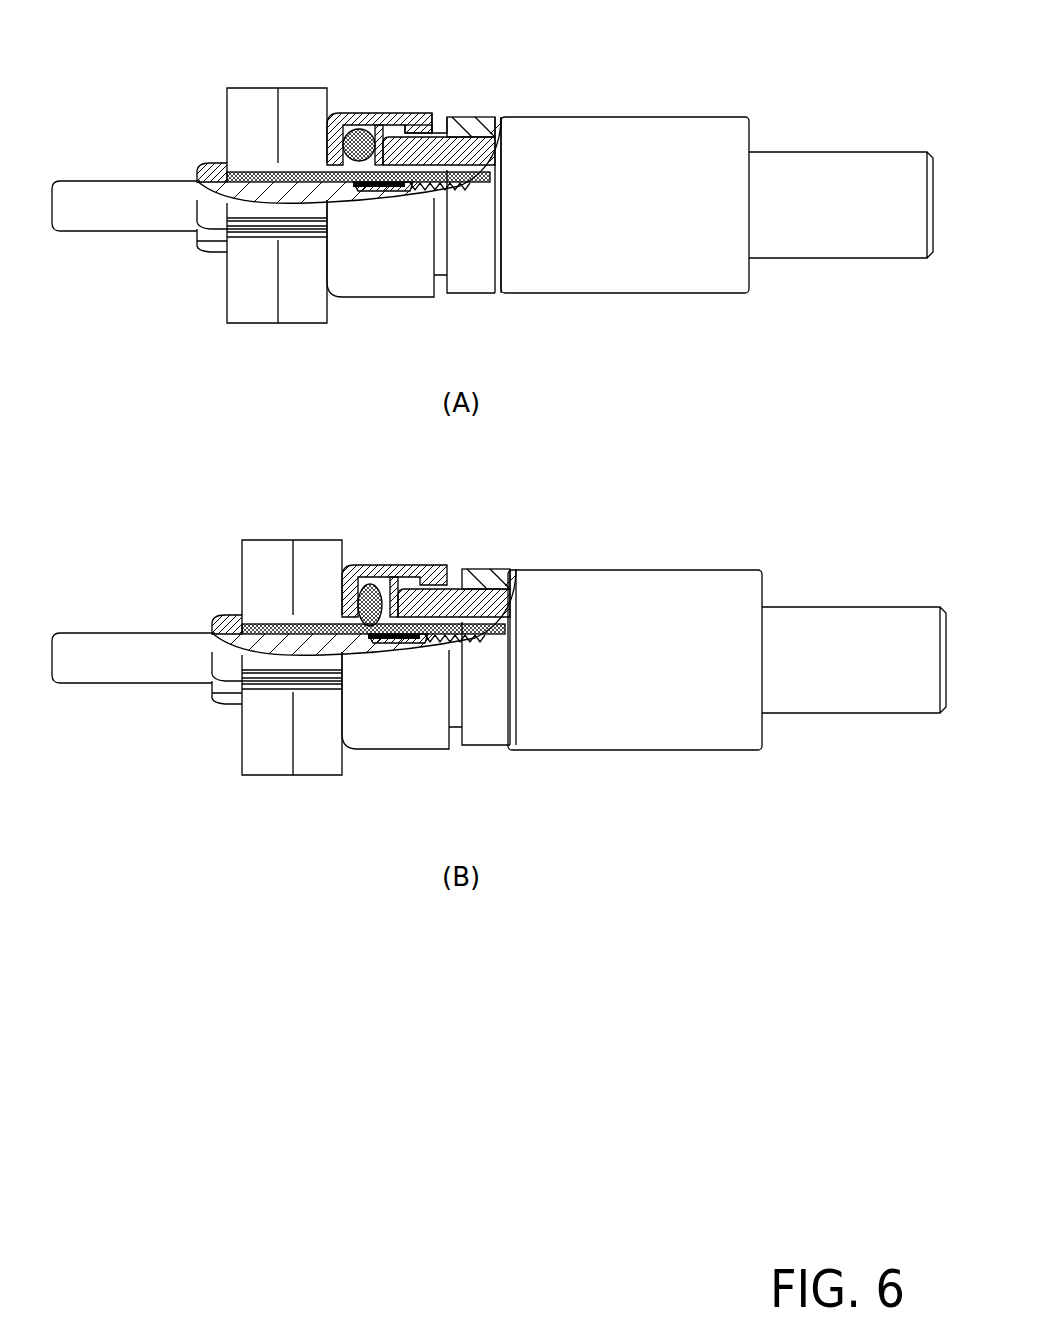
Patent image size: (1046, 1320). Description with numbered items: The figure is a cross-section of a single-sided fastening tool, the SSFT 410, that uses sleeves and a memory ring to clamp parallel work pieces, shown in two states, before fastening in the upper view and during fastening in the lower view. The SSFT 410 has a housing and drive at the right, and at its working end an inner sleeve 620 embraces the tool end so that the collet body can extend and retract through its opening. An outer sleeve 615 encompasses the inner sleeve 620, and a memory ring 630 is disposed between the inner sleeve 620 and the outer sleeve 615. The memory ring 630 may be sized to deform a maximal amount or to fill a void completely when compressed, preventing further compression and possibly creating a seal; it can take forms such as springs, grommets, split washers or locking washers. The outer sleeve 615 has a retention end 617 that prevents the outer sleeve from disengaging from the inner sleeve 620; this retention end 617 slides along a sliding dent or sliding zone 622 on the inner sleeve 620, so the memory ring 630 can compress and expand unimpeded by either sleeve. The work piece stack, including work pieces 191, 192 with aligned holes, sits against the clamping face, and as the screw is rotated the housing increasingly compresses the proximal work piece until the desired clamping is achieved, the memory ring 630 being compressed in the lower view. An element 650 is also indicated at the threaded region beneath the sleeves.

The SSFT 410 is at (617, 113).
The outer sleeve 615 is at (397, 123).
The retention end 617 is at (412, 122).
The inner sleeve 620 is at (472, 117).
The sliding zone 622 is at (438, 133).
The memory ring 630 is at (371, 162).
The thread/spring element 650 is at (433, 190).
The work piece 191 is at (261, 539).
The work piece 192 is at (323, 539).